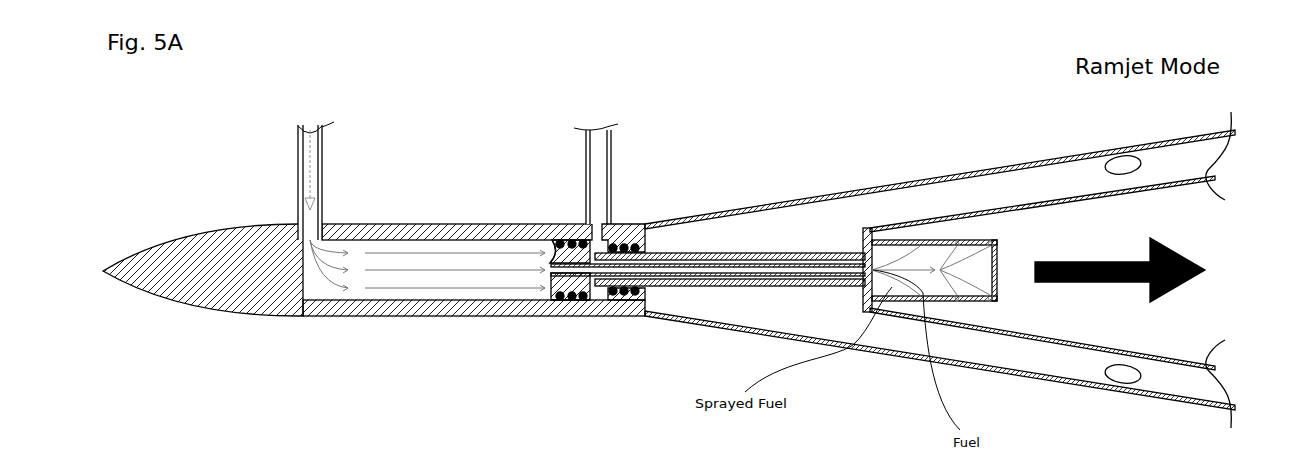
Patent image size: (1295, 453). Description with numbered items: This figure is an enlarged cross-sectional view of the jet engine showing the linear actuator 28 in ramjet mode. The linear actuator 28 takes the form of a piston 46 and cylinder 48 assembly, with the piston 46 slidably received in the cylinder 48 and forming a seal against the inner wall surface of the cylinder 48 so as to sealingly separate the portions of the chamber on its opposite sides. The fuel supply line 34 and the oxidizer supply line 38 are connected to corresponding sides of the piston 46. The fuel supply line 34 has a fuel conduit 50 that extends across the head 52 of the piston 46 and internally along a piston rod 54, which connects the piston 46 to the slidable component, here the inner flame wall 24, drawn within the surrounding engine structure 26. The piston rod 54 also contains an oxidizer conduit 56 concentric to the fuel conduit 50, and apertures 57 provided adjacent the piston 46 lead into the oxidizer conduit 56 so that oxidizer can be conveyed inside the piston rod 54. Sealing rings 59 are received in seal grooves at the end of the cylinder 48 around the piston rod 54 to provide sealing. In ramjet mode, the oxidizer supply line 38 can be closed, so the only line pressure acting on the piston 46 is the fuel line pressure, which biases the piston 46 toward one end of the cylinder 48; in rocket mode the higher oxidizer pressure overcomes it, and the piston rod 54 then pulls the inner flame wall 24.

The inner flame wall 24 is at (957, 217).
The diverging outer shell 26 is at (773, 203).
The linear actuator 28 is at (393, 126).
The fuel supply line 34 is at (297, 150).
The oxidizer supply line 38 is at (598, 150).
The piston 46 is at (578, 224).
The cylinder 48 is at (518, 230).
The fuel conduit 50 is at (522, 228).
The head 52 is at (557, 232).
The piston rod 54 is at (712, 253).
The oxidizer conduit 56 is at (755, 264).
The apertures 57 is at (582, 300).
The sealing rings 59 is at (560, 318).